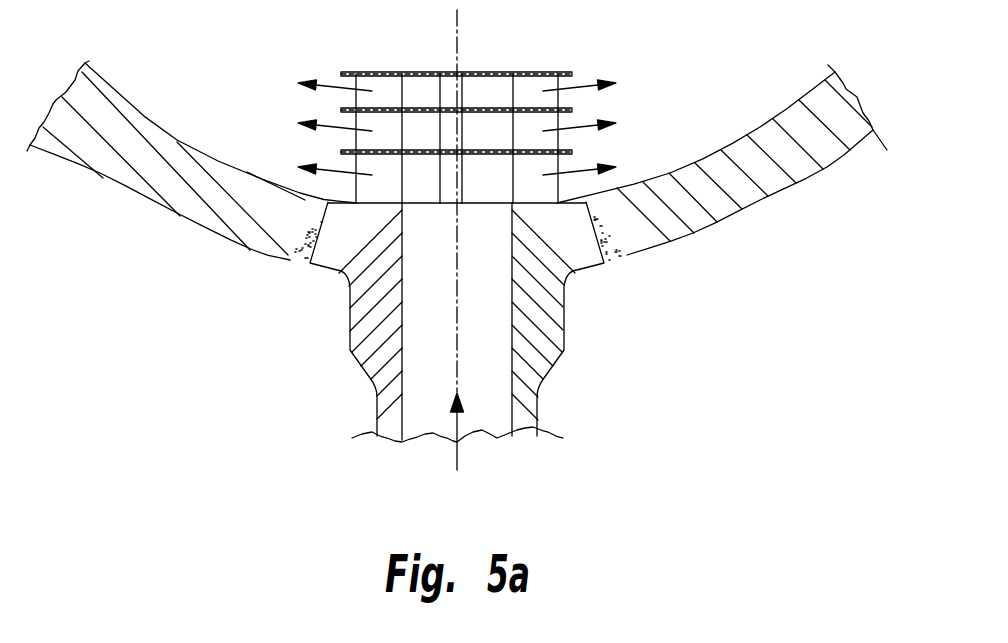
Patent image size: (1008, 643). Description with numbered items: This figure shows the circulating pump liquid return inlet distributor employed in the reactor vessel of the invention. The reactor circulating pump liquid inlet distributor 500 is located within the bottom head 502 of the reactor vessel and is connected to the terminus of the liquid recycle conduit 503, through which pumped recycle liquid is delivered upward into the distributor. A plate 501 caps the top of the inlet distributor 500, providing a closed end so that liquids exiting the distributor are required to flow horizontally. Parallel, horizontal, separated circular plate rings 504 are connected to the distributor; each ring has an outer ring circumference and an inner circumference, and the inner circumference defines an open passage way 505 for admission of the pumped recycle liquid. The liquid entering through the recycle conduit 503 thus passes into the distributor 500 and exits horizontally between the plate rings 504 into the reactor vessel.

The reactor circulating pump liquid inlet distributor 500 is at (485, 87).
The plate 501 is at (408, 72).
The bottom head 502 is at (733, 230).
The liquid recycle conduit 503 is at (567, 335).
The circular plate rings 504 is at (342, 150).
The open passage way 505 is at (548, 124).